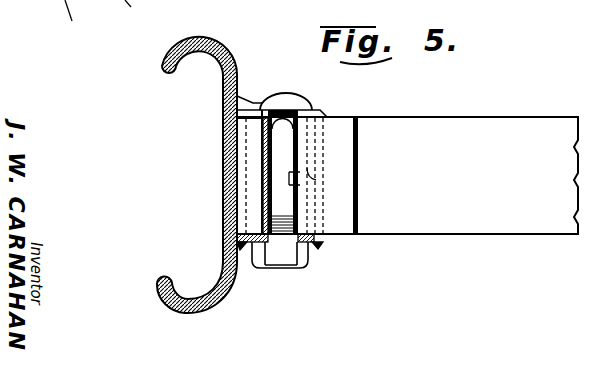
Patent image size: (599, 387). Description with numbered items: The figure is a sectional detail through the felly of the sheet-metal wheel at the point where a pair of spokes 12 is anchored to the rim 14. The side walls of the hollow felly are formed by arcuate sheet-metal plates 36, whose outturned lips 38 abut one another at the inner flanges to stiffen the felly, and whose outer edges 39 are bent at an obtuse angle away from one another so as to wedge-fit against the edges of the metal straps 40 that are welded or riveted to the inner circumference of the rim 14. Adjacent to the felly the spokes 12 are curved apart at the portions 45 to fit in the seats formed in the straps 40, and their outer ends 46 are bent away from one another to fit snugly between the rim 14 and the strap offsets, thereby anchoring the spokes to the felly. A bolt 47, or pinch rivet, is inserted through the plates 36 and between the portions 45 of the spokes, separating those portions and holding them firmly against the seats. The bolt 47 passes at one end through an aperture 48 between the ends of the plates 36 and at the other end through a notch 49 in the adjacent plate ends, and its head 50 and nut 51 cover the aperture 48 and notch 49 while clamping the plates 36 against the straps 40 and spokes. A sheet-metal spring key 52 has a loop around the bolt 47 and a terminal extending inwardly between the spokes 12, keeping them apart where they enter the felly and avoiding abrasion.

The spokes 12 is at (492, 126).
The rim 14 is at (160, 277).
The arcuate sections or plates 36 is at (312, 114).
The outturned lips 38 is at (131, 17).
The outer edges of the plates 39 is at (224, 240).
The metal straps 40 is at (61, 30).
The curved-apart portions of the spokes 45 is at (255, 173).
The outer ends of the spokes 46 is at (241, 198).
The bolts 47 is at (280, 152).
The apertures 48 is at (300, 236).
The notches 49 is at (262, 104).
The heads of the bolts 50 is at (285, 96).
The nuts 51 is at (283, 252).
The spring keys 52 is at (266, 135).